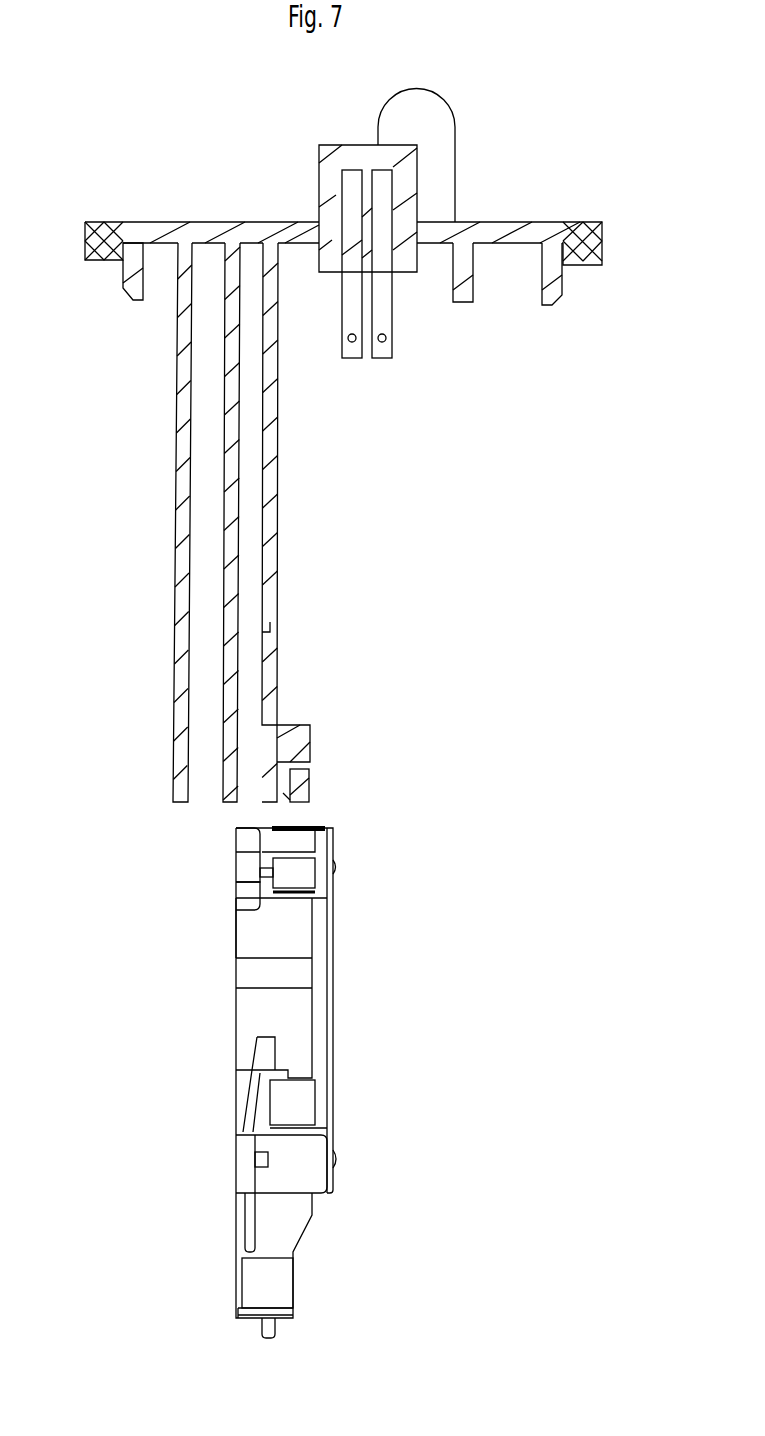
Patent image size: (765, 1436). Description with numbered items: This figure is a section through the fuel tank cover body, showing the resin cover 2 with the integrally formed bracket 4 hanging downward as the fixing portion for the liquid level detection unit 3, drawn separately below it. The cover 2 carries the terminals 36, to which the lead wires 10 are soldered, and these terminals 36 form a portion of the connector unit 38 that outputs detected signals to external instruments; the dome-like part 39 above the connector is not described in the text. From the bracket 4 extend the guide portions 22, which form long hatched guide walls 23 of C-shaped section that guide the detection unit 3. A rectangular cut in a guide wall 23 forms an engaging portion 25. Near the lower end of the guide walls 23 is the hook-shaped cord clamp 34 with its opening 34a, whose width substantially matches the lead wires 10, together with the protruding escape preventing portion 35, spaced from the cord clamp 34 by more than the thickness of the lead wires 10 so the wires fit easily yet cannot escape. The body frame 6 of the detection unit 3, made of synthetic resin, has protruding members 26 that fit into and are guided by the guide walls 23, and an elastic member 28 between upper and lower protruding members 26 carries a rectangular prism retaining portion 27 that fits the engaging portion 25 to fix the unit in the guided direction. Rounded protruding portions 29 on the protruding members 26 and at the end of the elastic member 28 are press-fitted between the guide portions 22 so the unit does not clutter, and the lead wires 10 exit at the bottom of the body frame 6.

The cover 2 is at (522, 232).
The liquid level detection unit 3 is at (283, 1082).
The bracket 4 is at (178, 401).
The body frame 6 is at (277, 943).
The lead wires 10 is at (272, 1330).
The guide portions 22 is at (285, 488).
The guide walls 23 is at (270, 428).
The engaging portions 25 is at (270, 630).
The protruding members 26 is at (247, 896).
The retaining portion 27 is at (255, 1060).
The elastic member 28 is at (252, 1107).
The rounded protruding portions 29 is at (245, 863).
The cord clamp 34 is at (300, 778).
The opening 34a is at (283, 790).
The escape preventing portion 35 is at (300, 740).
The terminals 36 is at (383, 313).
The connector unit 38 is at (328, 175).
The dome 39 is at (447, 142).